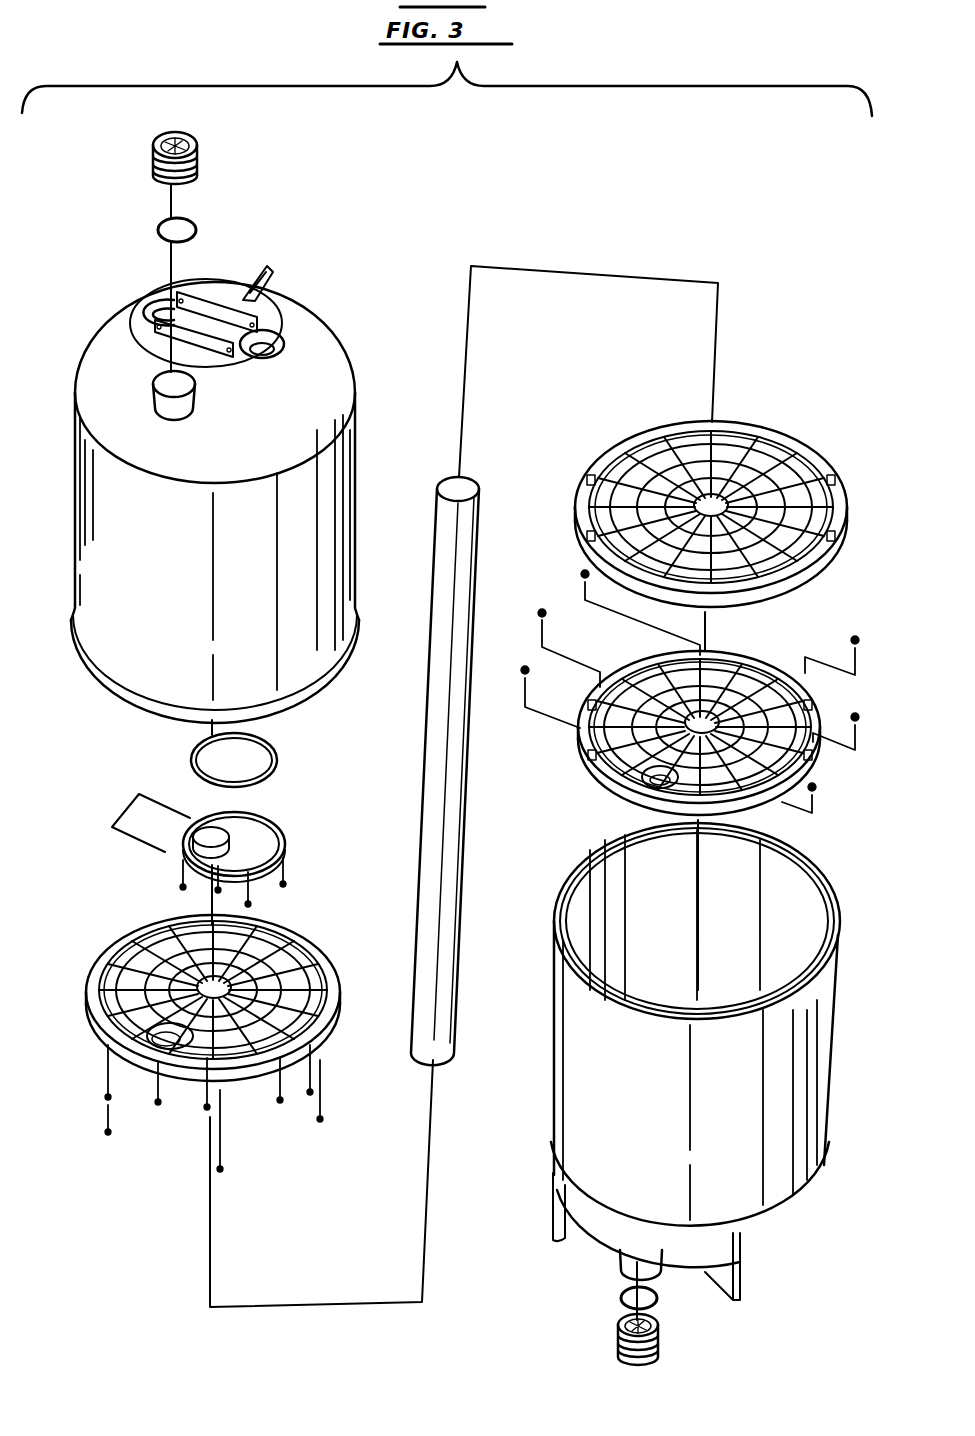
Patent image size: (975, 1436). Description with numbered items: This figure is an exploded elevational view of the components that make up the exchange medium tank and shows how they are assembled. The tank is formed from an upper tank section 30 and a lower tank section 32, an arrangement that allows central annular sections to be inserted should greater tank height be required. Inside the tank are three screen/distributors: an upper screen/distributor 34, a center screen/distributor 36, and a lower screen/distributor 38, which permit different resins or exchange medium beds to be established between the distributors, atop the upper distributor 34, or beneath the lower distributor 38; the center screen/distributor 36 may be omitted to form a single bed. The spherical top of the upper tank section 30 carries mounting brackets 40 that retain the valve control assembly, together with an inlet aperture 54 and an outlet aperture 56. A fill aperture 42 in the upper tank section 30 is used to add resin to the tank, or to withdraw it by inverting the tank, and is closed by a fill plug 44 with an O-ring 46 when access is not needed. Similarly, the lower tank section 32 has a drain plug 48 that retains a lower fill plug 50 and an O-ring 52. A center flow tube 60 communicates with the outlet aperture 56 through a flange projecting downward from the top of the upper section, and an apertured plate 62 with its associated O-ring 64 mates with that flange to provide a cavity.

The upper tank section 30 is at (82, 516).
The lower tank section 32 is at (828, 1042).
The upper screen/distributor 34 is at (121, 946).
The center screen/distributor 36 is at (805, 450).
The lower screen/distributor 38 is at (775, 660).
The mounting brackets 40 is at (262, 300).
The fill aperture 42 is at (153, 378).
The fill plug 44 is at (198, 148).
The O-ring 46 is at (196, 226).
The drain plug 48 is at (620, 1277).
The lower fill plug 50 is at (662, 1350).
The O-ring 52 is at (660, 1300).
The inlet aperture 54 is at (143, 301).
The outlet aperture 56 is at (284, 338).
The center flow tube 60 is at (479, 521).
The apertured plate 62 is at (287, 845).
The O-ring 64 is at (278, 758).